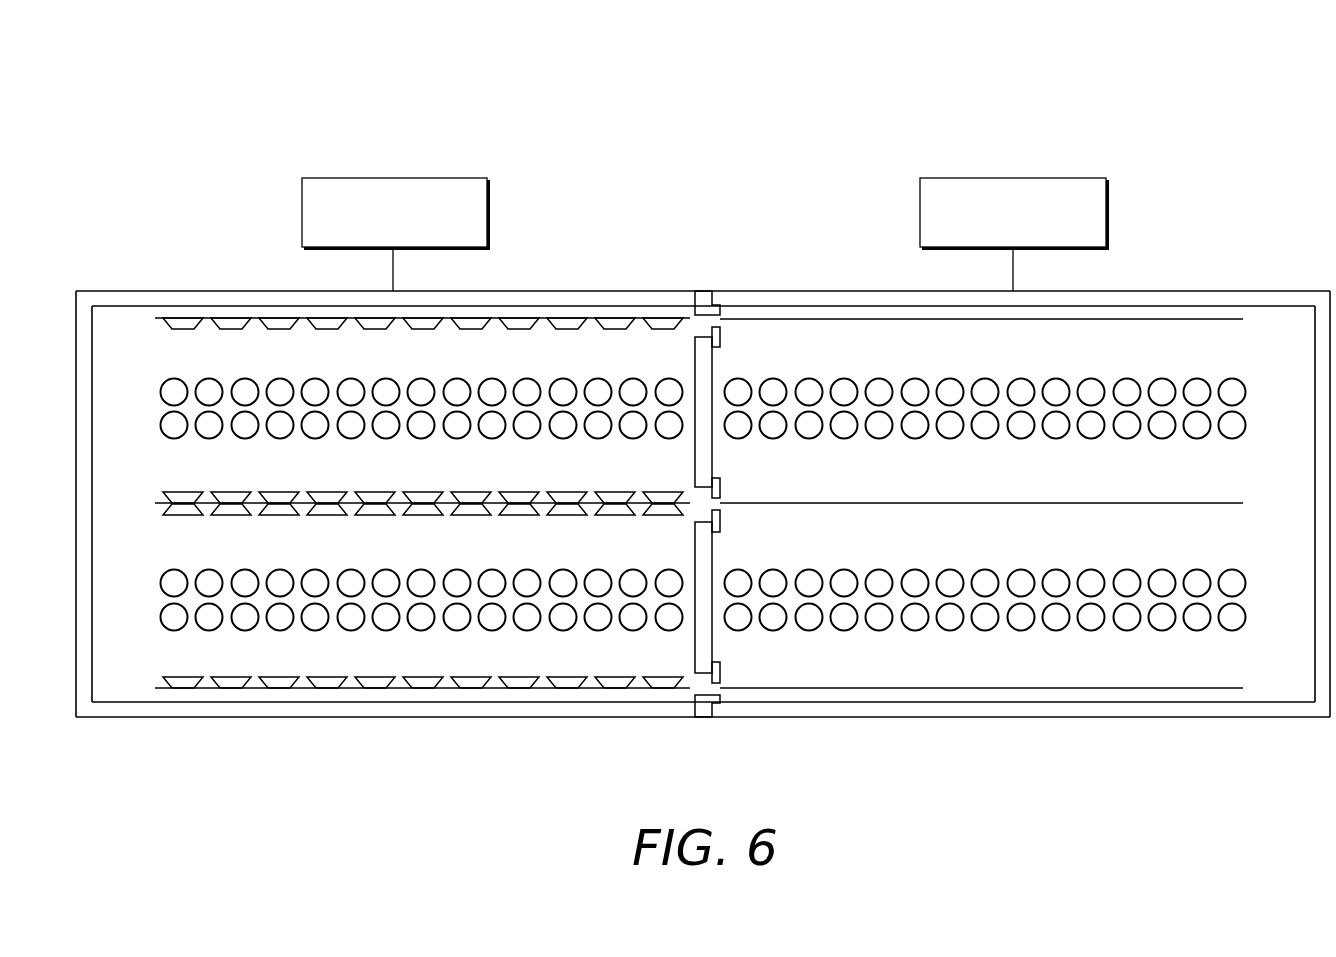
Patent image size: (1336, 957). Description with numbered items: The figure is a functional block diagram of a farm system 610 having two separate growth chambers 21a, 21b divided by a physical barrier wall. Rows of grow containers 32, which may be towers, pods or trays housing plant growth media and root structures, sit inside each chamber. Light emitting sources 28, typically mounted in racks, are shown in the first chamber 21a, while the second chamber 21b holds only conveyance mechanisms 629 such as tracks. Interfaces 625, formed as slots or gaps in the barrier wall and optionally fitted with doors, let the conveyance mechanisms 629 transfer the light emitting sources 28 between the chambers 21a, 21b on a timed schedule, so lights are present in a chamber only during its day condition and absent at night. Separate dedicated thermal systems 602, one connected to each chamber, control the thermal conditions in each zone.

The farm system 610 is at (1198, 110).
The thermal system 602 is at (380, 178).
The light emitting source 28 is at (253, 317).
The interface 625 is at (720, 335).
The conveyance mechanism 629 is at (1113, 503).
The growth chamber 21a is at (1270, 328).
The growth chamber 21b is at (134, 681).
The grow container 32 is at (170, 614).